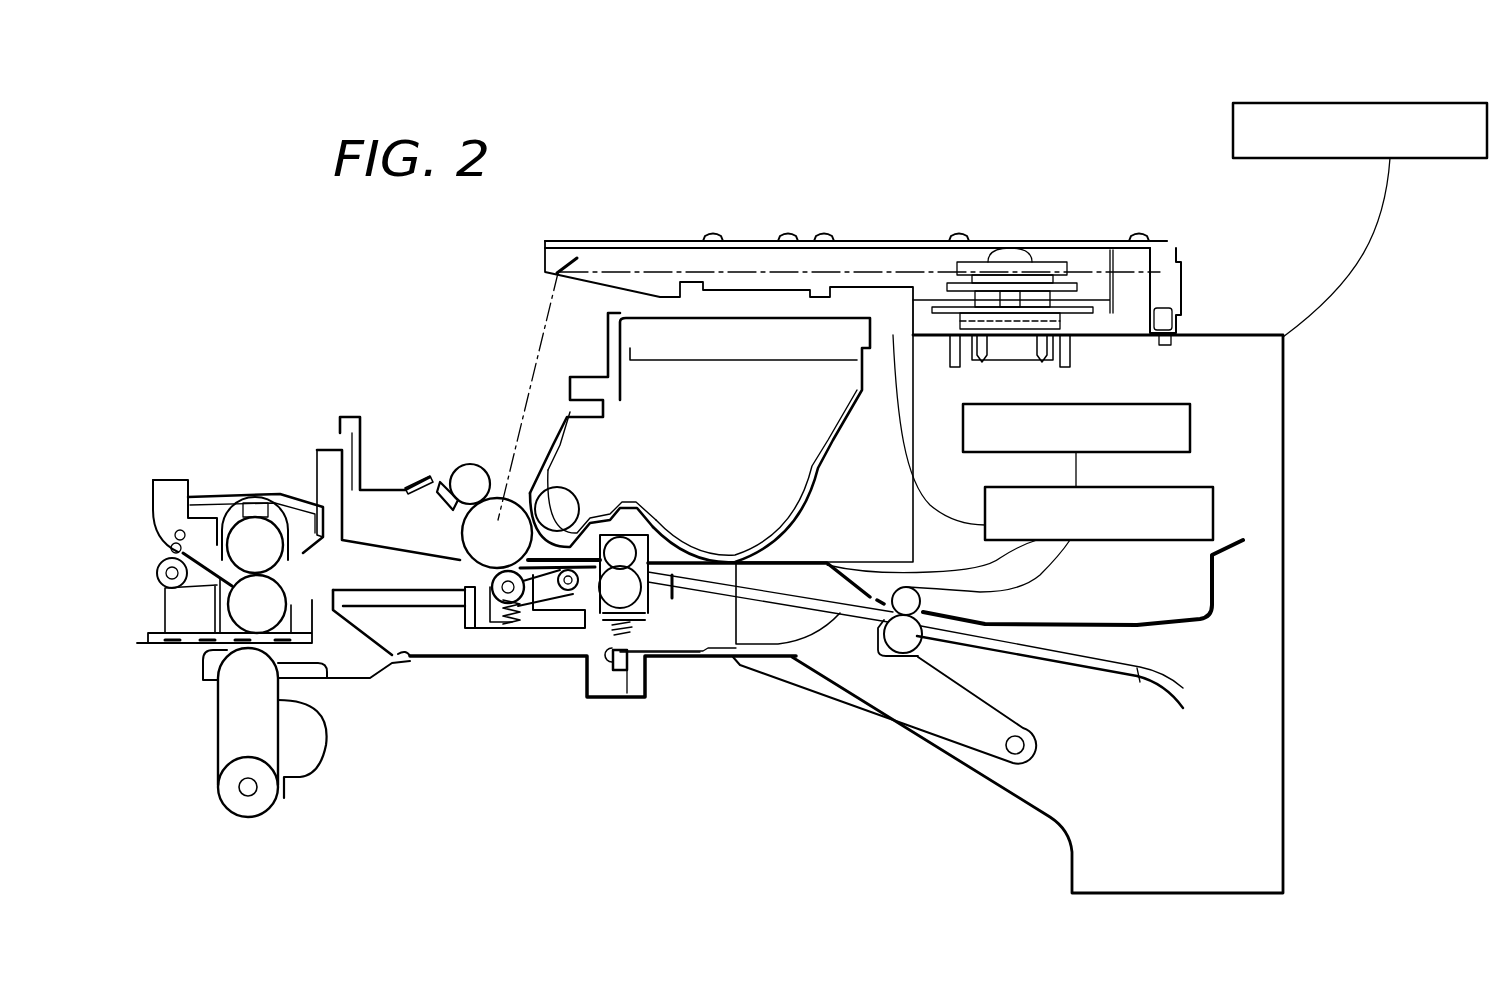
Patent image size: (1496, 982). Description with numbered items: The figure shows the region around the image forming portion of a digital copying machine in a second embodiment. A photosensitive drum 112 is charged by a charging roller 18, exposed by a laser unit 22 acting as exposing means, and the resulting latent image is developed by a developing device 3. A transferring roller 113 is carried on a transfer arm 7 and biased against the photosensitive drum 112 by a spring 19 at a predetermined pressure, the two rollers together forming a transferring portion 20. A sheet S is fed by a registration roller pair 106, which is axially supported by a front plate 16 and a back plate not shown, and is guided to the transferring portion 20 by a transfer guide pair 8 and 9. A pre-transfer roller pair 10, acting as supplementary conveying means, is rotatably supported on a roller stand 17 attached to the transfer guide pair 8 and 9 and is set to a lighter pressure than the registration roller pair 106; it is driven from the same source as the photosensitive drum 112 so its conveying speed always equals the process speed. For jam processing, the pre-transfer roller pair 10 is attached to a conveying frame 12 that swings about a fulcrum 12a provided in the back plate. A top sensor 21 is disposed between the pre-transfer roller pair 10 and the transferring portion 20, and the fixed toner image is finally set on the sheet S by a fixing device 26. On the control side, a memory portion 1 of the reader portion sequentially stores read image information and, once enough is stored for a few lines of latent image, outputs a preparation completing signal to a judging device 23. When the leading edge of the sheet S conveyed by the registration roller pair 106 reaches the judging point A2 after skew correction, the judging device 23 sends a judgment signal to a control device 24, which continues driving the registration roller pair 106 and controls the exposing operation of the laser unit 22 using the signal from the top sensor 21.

The memory portion 1 is at (1462, 103).
The developing device 3 is at (828, 455).
The transfer arm 7 is at (548, 594).
The transfer guide 8 is at (576, 562).
The transfer guide 9 is at (587, 556).
The pre-transfer roller pair 10 is at (650, 616).
The conveying frame 12 is at (415, 662).
The fulcrum 12a is at (1013, 750).
The front plate 16 is at (1222, 352).
The roller stand 17 is at (643, 537).
The charging roller 18 is at (455, 470).
The spring 19 is at (512, 608).
The transferring portion 20 is at (476, 571).
The top sensor 21 is at (627, 678).
The laser unit 22 is at (675, 255).
The judging device 23 is at (1148, 404).
The control device 24 is at (1198, 487).
The fixing device 26 is at (272, 535).
The registration roller pair 106 is at (925, 650).
The photosensitive drum 112 is at (503, 497).
The transferring roller 113 is at (493, 607).
The judging point A2 is at (674, 600).
The sheet S is at (1137, 683).